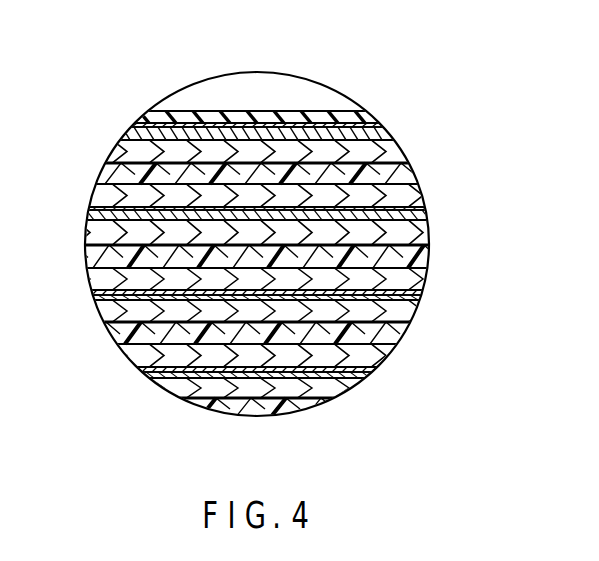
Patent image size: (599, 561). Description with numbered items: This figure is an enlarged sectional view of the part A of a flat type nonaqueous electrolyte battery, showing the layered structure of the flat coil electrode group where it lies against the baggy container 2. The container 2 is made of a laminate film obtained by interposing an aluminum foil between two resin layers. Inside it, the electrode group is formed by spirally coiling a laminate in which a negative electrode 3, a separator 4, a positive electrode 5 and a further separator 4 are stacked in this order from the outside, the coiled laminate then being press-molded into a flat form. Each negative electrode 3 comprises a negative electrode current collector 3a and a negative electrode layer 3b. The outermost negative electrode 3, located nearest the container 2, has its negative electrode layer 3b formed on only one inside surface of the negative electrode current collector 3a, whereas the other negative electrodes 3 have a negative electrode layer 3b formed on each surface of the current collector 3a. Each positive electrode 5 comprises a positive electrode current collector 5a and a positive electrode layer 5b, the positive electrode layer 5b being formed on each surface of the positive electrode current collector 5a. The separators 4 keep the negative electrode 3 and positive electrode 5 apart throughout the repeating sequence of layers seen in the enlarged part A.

The baggy container 2 is at (366, 111).
The negative electrode 3 is at (472, 87).
The negative electrode current collector 3a is at (385, 130).
The negative electrode layer 3b is at (393, 150).
The separator 4 is at (108, 173).
The positive electrode 5 is at (497, 157).
The positive electrode current collector 5a is at (413, 213).
The positive electrode layer 5b is at (413, 188).
The part A is at (175, 98).